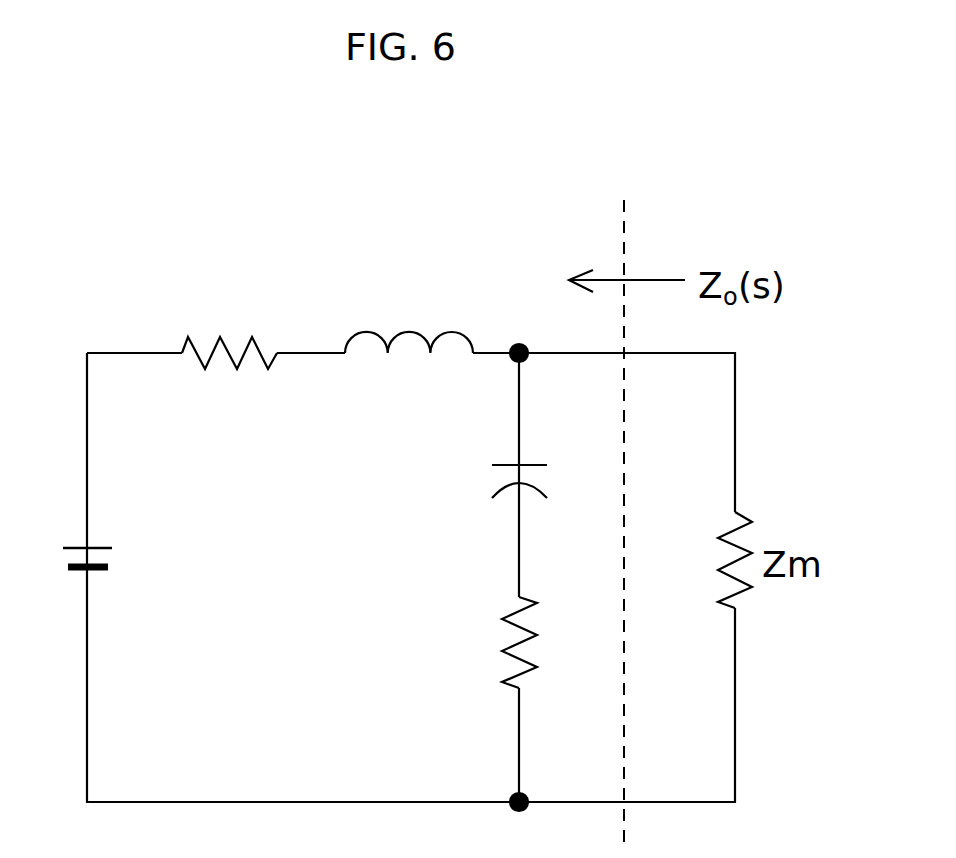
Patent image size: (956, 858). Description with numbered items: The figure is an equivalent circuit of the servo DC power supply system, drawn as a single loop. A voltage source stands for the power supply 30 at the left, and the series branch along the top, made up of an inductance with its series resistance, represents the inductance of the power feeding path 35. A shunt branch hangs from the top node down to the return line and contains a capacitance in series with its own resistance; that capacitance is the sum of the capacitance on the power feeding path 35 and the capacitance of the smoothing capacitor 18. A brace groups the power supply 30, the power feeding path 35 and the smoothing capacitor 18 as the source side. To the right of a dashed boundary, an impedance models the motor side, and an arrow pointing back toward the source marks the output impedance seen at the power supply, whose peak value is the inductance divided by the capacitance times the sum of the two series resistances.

The power supply 30 is at (102, 540).
The power feeding path 35 is at (584, 222).
The smoothing capacitor 18 is at (452, 423).